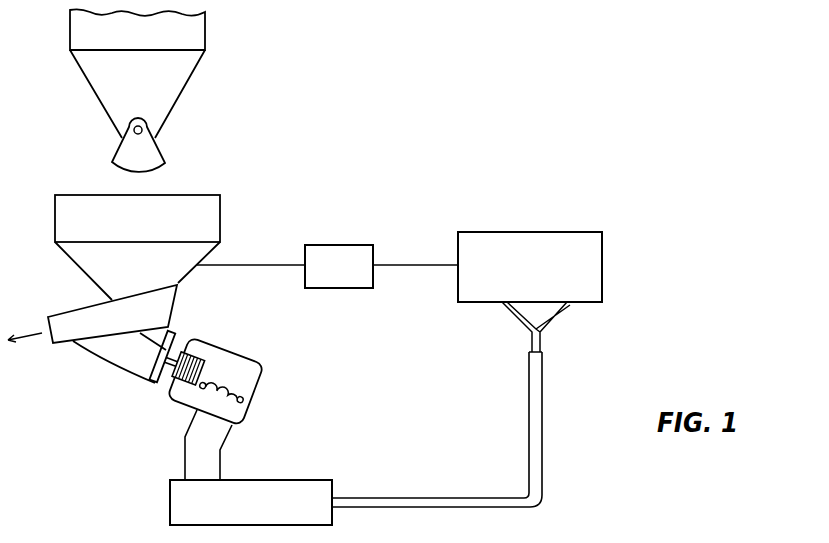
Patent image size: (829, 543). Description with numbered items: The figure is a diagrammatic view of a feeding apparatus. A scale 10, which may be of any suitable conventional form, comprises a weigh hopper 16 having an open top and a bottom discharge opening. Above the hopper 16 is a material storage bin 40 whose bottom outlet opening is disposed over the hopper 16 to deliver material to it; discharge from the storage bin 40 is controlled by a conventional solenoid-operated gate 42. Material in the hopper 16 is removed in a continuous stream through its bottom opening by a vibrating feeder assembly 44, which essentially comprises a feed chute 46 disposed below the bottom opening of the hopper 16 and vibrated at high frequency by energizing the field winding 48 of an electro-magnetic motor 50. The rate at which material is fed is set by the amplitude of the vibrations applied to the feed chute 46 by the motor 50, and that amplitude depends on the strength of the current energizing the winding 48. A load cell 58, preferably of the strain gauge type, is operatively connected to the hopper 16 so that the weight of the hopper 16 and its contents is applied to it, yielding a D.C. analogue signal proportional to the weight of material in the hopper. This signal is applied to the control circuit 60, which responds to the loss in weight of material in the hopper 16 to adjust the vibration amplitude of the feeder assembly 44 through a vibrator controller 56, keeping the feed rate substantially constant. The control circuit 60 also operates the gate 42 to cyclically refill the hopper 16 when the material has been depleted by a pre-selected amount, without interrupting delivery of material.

The scale 10 is at (144, 245).
The hopper 16 is at (55, 216).
The material storage bin 40 is at (150, 86).
The gate 42 is at (155, 153).
The vibrating feeder assembly 44 is at (104, 369).
The feed chute 46 is at (52, 318).
The field winding 48 is at (244, 397).
The electro-magnetic motor 50 is at (235, 355).
The vibrator controller 56 is at (272, 480).
The load cell 58 is at (342, 245).
The control circuit 60 is at (545, 232).